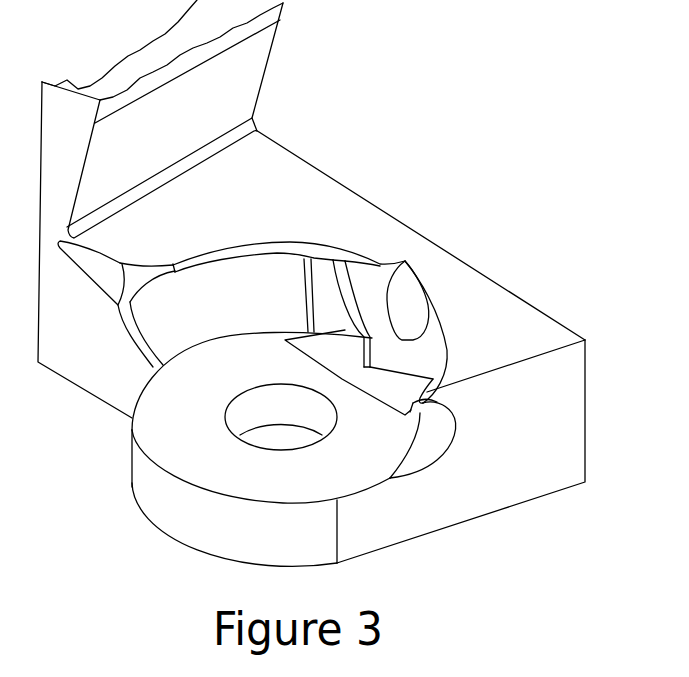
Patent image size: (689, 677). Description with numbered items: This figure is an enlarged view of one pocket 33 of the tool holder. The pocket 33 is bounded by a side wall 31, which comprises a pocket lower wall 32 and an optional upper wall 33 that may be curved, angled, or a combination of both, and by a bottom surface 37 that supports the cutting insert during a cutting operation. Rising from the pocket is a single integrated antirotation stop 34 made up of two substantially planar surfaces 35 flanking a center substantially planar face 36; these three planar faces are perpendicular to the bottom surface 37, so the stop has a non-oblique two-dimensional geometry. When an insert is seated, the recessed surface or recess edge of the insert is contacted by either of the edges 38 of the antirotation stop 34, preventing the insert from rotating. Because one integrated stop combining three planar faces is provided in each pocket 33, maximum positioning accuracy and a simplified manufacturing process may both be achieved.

The side wall 31 is at (115, 265).
The pocket lower wall 32 is at (182, 337).
The pocket 33 is at (217, 255).
The antirotation stop 34 is at (340, 378).
The substantially planar surfaces 35 is at (342, 282).
The center substantially planar face 36 is at (357, 425).
The bottom surface 37 is at (235, 483).
The edges 38 is at (410, 255).